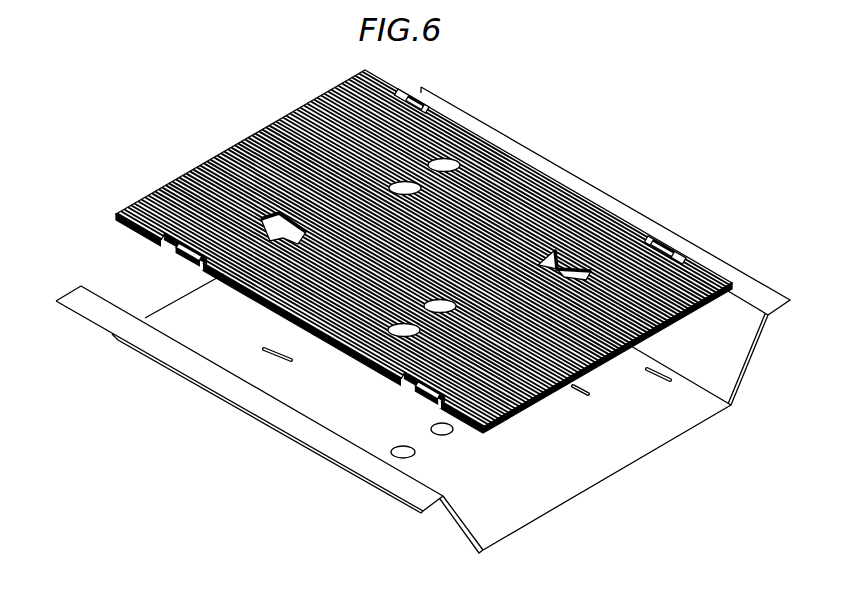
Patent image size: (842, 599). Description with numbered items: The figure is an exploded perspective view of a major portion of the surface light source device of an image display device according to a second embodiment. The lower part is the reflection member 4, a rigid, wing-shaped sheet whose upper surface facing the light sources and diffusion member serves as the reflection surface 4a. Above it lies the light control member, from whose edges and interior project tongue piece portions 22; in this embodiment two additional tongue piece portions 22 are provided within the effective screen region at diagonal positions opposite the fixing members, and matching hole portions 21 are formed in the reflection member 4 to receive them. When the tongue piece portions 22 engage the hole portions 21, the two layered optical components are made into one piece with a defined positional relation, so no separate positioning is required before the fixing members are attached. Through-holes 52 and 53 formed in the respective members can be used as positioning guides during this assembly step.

The reflection member 4 is at (437, 512).
The reflection surface 4a is at (562, 462).
The hole portions 21 is at (258, 343).
The tongue piece portions 22 is at (170, 233).
The through-hole 52 is at (436, 425).
The through-hole 53 is at (392, 178).